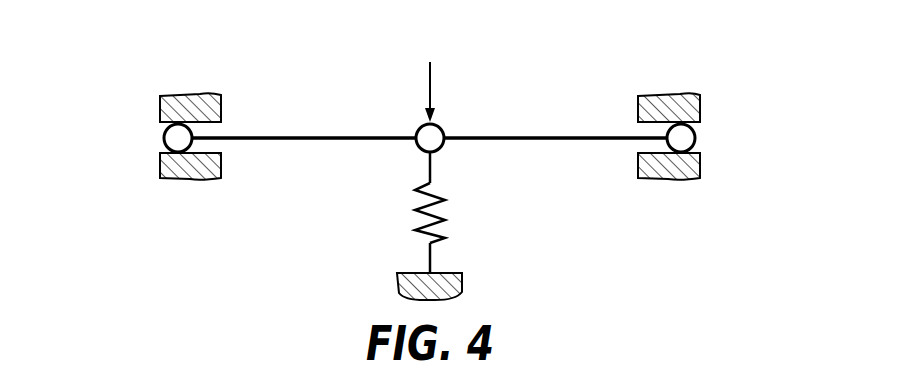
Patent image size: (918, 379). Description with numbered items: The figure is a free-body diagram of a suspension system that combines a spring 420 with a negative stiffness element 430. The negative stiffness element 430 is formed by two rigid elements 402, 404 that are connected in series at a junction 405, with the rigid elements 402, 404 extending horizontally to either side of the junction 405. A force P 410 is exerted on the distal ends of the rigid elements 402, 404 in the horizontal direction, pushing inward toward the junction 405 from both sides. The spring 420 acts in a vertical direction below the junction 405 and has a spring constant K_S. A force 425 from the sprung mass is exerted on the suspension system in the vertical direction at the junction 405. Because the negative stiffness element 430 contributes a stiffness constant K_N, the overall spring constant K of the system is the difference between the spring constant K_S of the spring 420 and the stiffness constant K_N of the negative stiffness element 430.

The rigid element 402 is at (303, 138).
The rigid element 404 is at (555, 138).
The junction 405 is at (442, 128).
The force P 410 is at (152, 138).
The spring 420 is at (442, 220).
The force from the sprung mass 425 is at (452, 60).
The negative stiffness element 430 is at (470, 80).